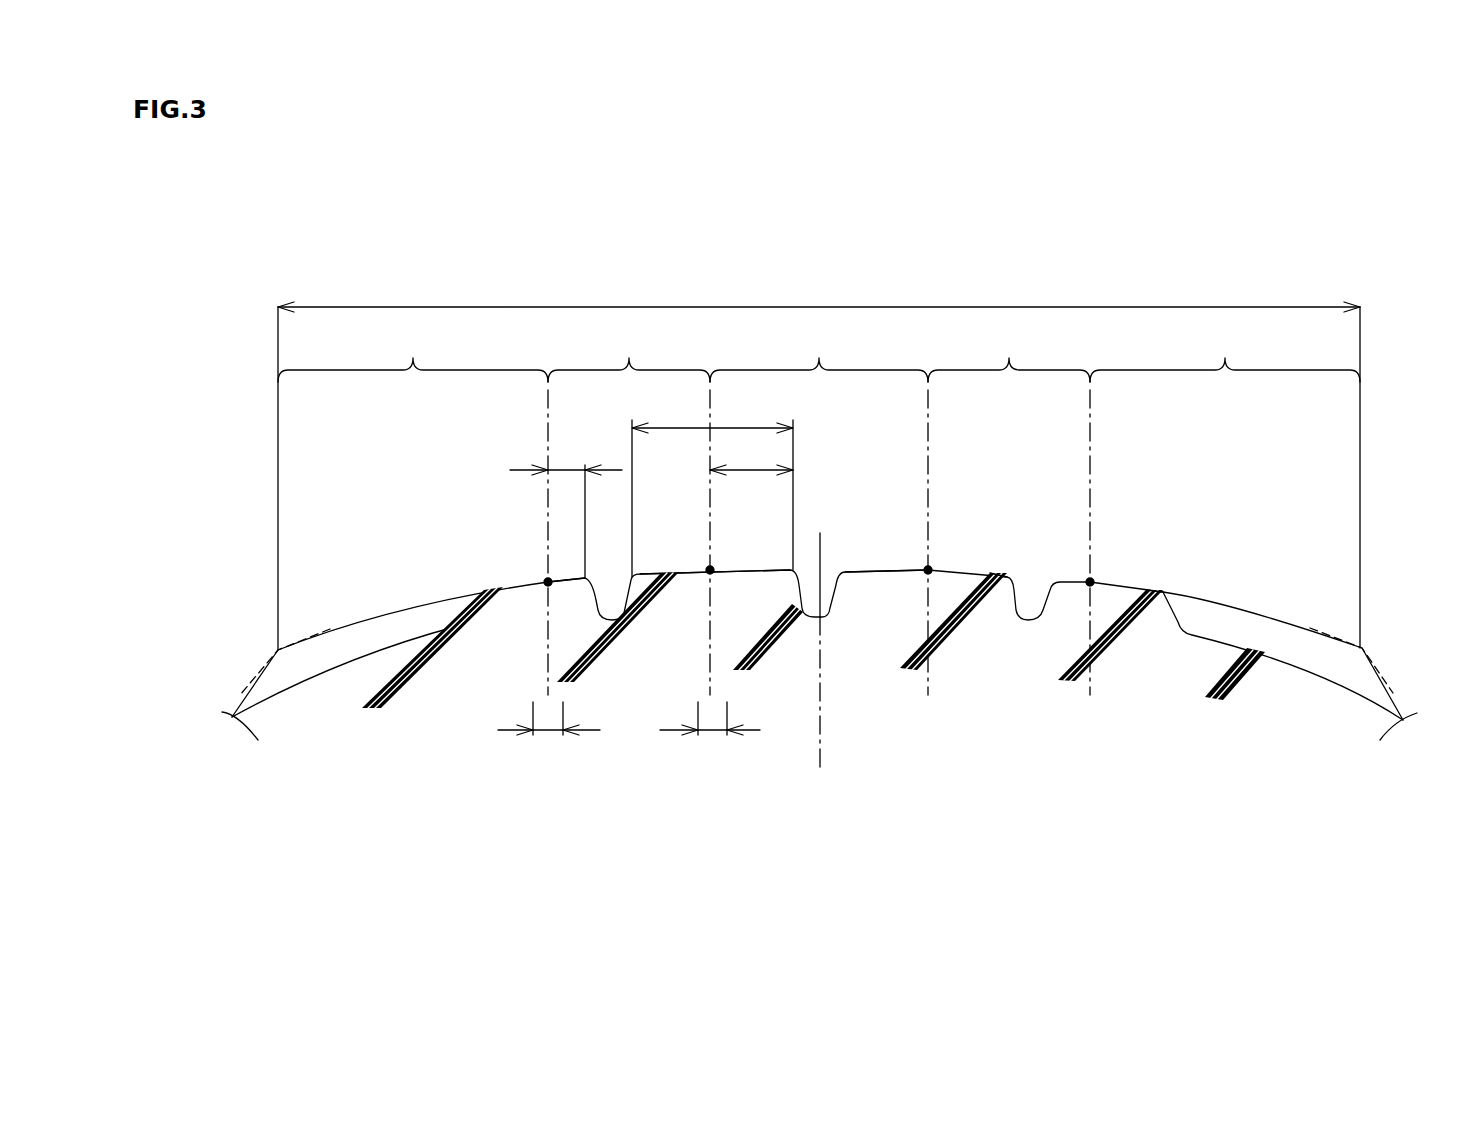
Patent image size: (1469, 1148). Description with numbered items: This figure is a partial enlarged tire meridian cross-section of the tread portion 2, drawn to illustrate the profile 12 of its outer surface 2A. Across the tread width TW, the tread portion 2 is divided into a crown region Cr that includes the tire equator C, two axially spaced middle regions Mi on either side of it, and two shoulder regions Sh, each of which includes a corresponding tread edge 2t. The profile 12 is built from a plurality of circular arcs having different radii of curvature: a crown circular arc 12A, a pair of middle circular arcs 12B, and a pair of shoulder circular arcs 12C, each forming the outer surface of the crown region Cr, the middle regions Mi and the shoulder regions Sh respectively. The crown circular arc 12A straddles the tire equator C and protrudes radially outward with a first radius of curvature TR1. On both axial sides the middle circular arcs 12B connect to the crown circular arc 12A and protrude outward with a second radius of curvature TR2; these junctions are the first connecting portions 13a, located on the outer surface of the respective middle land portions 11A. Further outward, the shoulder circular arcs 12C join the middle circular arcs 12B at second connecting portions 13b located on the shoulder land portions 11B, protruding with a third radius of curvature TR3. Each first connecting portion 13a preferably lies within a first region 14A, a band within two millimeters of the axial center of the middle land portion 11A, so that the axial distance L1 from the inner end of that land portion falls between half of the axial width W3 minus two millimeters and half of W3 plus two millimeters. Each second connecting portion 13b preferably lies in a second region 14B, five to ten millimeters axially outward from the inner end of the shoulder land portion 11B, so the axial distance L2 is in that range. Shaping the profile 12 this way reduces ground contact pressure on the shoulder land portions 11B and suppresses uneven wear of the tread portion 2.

The tread portion 2 is at (1248, 570).
The tread edge 2t is at (278, 650).
The outer surface of the tread portion 2A is at (1172, 483).
The profile 12 is at (763, 591).
The crown circular arc 12A is at (866, 568).
The middle circular arc 12B is at (667, 571).
The shoulder circular arc 12C is at (503, 585).
The middle land portion 11A is at (748, 595).
The shoulder land portion 11B is at (532, 612).
The first connecting portion 13a is at (710, 568).
The second connecting portion 13b is at (547, 580).
The first region 14A is at (710, 736).
The second region 14B is at (549, 736).
The tread width TW is at (819, 459).
The shoulder region Sh is at (819, 356).
The middle region Mi is at (819, 356).
The crown region Cr is at (819, 356).
The tire equator C is at (820, 635).
The axial width of the middle land portion W3 is at (712, 488).
The axial distance between first connecting portion and inner end of middle land por L1 is at (751, 458).
The axial distance between second connecting portion and inner end of shoulder land L2 is at (566, 507).
The first radius of curvature TR1 is at (887, 575).
The second radius of curvature TR2 is at (988, 575).
The third radius of curvature TR3 is at (1147, 590).